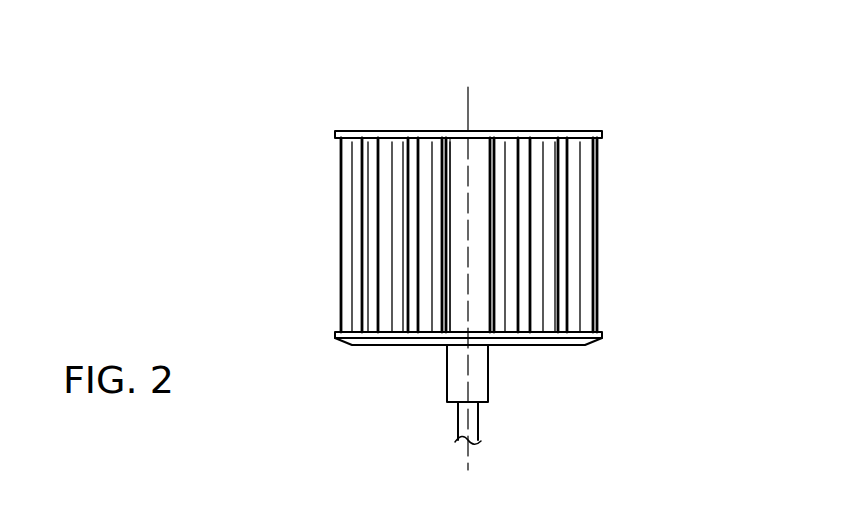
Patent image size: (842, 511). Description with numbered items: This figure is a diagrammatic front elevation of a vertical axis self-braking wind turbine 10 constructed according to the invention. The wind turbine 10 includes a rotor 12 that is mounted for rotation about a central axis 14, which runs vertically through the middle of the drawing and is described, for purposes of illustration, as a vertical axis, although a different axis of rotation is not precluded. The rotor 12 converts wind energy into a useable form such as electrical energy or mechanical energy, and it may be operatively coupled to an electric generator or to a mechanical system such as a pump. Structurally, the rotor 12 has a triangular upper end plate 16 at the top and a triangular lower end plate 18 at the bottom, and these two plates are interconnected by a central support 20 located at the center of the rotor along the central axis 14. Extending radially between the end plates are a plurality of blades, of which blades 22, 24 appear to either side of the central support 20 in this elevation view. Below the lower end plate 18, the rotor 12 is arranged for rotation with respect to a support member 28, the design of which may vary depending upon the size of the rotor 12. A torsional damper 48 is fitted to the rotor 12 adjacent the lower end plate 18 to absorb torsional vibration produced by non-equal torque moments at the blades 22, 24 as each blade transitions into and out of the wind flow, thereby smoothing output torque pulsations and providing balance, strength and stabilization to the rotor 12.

The wind turbine 10 is at (645, 157).
The rotor 12 is at (330, 168).
The central axis 14 is at (468, 100).
The upper end plate 16 is at (390, 130).
The lower end plate 18 is at (356, 342).
The central support 20 is at (475, 167).
The blade 22 is at (343, 262).
The blade 24 is at (592, 240).
The support member 28 is at (478, 408).
The torsional damper 48 is at (413, 344).